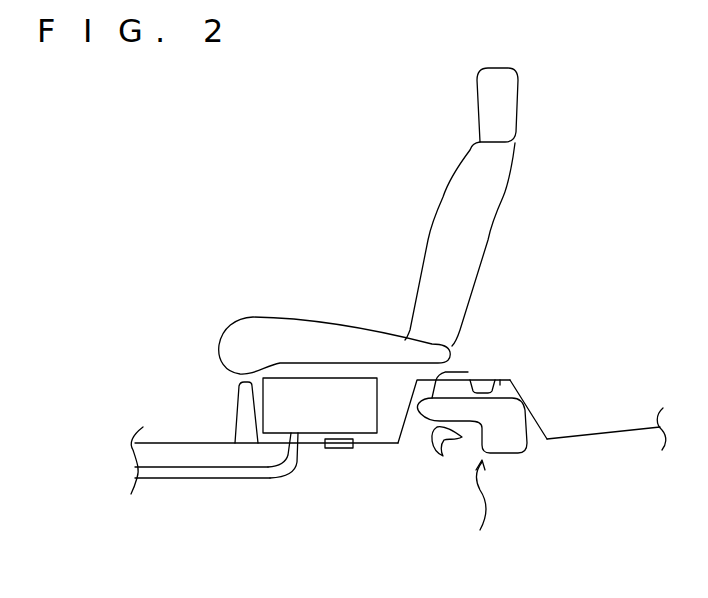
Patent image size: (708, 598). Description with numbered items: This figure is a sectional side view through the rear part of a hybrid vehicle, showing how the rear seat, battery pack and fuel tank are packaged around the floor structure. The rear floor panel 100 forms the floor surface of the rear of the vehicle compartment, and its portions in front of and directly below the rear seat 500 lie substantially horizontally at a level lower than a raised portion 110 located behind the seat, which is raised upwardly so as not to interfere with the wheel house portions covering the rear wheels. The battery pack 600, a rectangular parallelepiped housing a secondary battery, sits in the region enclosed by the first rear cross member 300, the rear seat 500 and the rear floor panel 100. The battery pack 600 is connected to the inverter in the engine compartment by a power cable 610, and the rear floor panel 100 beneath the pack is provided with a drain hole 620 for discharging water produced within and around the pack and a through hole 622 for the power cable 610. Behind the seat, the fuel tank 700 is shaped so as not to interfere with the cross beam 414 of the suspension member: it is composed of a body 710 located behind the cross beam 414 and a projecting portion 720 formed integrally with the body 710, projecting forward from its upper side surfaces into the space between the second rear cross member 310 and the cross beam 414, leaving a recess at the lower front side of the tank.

The rear floor panel 100 is at (610, 437).
The raised portion 110 is at (492, 380).
The first rear cross member 300 is at (235, 410).
The second rear cross member 310 is at (518, 390).
The cross beam 414 is at (441, 455).
The rear seat 500 is at (253, 317).
The battery pack 600 is at (325, 377).
The power cable 610 is at (178, 480).
The drain hole 620 is at (342, 448).
The through hole 622 is at (295, 443).
The fuel tank 700 is at (480, 510).
The body 710 is at (510, 453).
The projecting portion 720 is at (468, 372).